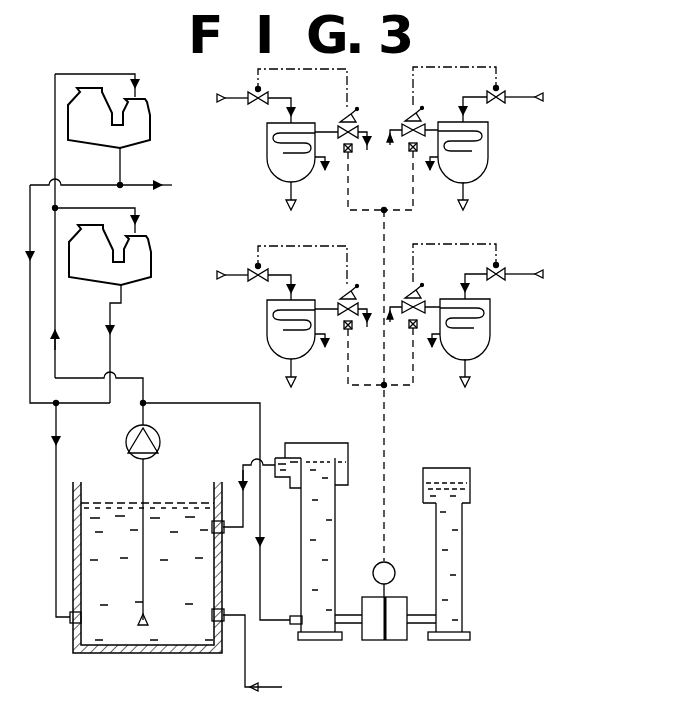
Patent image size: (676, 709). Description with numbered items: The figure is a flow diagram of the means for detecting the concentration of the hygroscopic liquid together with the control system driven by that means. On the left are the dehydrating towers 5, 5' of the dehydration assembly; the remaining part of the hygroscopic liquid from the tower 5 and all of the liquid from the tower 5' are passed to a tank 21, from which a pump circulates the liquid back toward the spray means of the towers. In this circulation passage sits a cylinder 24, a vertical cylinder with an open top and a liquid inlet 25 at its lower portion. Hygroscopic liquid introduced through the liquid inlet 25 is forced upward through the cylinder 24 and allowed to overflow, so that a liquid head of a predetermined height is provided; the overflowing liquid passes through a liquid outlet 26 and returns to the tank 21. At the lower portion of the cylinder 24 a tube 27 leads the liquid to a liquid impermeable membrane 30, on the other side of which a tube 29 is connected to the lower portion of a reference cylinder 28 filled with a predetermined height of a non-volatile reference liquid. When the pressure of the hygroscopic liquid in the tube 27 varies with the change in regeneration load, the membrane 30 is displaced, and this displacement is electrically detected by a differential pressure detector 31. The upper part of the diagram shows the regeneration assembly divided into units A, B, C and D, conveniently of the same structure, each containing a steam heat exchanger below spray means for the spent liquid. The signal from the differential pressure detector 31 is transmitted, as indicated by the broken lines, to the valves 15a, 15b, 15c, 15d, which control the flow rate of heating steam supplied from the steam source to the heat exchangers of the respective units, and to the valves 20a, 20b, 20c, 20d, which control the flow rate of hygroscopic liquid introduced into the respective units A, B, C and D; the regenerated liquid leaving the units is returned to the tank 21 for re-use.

The dehydrating tower 5 is at (121, 136).
The dehydrating tower 5' is at (125, 314).
The valve 20a is at (256, 88).
The valve 20b is at (498, 86).
The valve 20c is at (272, 263).
The valve 20d is at (491, 266).
The valve 15a is at (350, 140).
The valve 15b is at (410, 150).
The valve 15c is at (351, 356).
The valve 15d is at (413, 353).
The regeneration unit A is at (270, 168).
The regeneration unit B is at (488, 168).
The regeneration unit C is at (287, 345).
The regeneration unit D is at (478, 343).
The tank 21 is at (103, 657).
The cylinder 24 is at (337, 540).
The liquid inlet 25 is at (290, 617).
The liquid outlet 26 is at (278, 458).
The tube 27 is at (352, 627).
The reference cylinder 28 is at (462, 540).
The tube 29 is at (422, 627).
The liquid impermeable membrane 30 is at (386, 626).
The differential pressure detector 31 is at (392, 566).